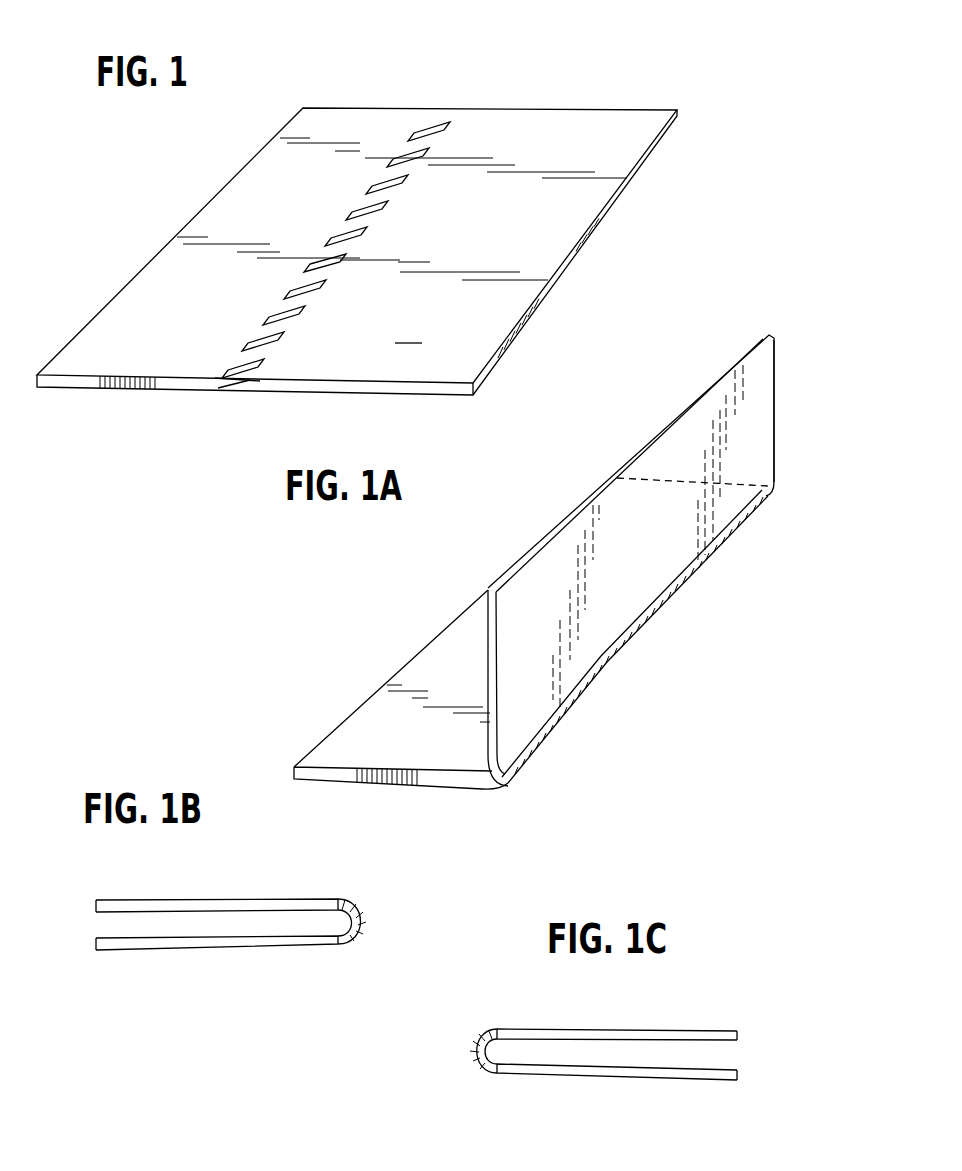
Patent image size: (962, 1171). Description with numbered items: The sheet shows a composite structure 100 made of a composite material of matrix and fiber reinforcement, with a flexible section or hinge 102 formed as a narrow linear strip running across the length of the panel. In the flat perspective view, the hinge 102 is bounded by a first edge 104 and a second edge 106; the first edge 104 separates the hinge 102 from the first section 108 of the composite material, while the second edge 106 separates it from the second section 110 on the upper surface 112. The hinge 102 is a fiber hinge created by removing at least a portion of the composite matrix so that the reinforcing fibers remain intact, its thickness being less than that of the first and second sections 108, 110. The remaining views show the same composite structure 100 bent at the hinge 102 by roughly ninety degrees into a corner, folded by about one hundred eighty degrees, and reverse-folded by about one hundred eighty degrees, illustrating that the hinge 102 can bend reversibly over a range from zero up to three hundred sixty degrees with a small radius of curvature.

In FIG. 1, the composite structure 100 is at (577, 75).
In FIG. 1A, the composite structure 100 is at (364, 683).
In FIG. 1B, the composite structure 100 is at (90, 924).
In FIG. 1C, the composite structure 100 is at (727, 1053).
In FIG. 1, the hinge 102 is at (430, 123).
In FIG. 1A, the hinge 102 is at (687, 588).
In FIG. 1B, the hinge 102 is at (353, 913).
In FIG. 1C, the hinge 102 is at (475, 1052).
In FIG. 1, the first edge 104 is at (300, 316).
In FIG. 1A, the first edge 104 is at (740, 527).
In FIG. 1, the second edge 106 is at (407, 147).
In FIG. 1, the first section 108 is at (510, 232).
In FIG. 1A, the first section 108 is at (537, 695).
In FIG. 1B, the first section 108 is at (162, 903).
In FIG. 1C, the first section 108 is at (573, 1032).
In FIG. 1, the second section 110 is at (253, 213).
In FIG. 1A, the second section 110 is at (432, 687).
In FIG. 1B, the second section 110 is at (177, 945).
In FIG. 1C, the second section 110 is at (580, 1072).
In FIG. 1, the upper surface 112 is at (409, 333).